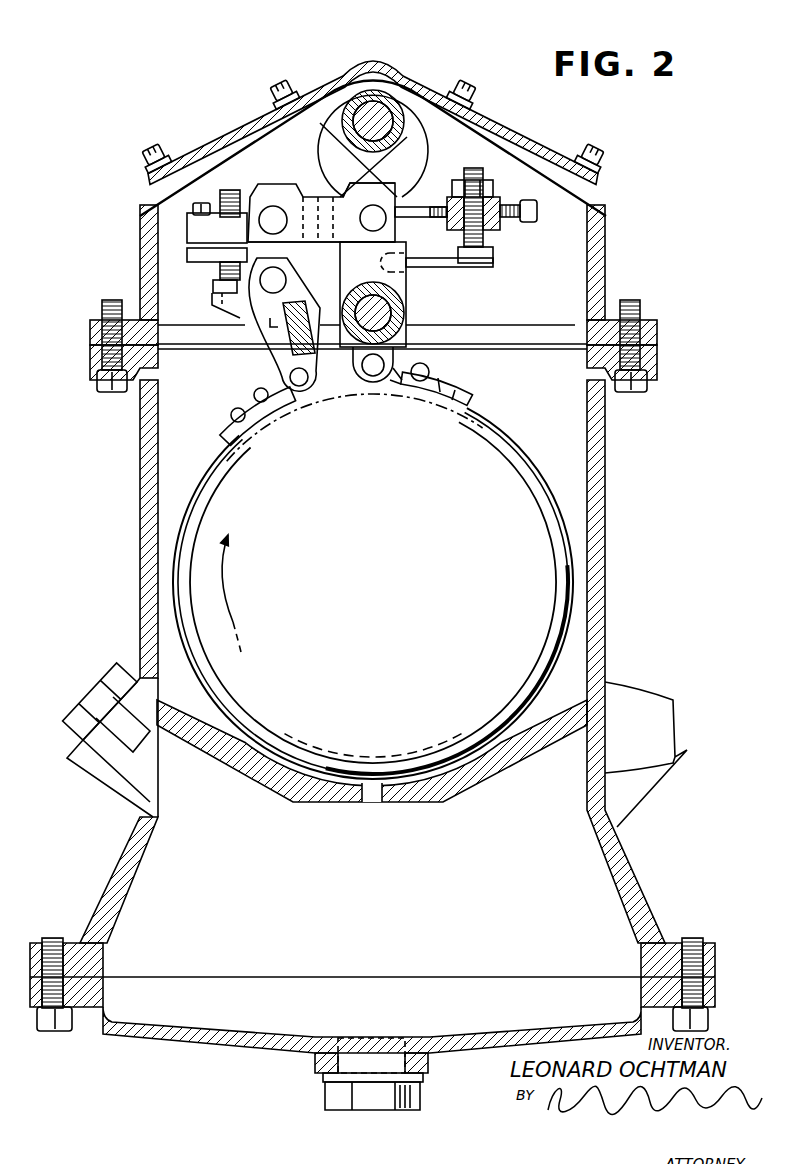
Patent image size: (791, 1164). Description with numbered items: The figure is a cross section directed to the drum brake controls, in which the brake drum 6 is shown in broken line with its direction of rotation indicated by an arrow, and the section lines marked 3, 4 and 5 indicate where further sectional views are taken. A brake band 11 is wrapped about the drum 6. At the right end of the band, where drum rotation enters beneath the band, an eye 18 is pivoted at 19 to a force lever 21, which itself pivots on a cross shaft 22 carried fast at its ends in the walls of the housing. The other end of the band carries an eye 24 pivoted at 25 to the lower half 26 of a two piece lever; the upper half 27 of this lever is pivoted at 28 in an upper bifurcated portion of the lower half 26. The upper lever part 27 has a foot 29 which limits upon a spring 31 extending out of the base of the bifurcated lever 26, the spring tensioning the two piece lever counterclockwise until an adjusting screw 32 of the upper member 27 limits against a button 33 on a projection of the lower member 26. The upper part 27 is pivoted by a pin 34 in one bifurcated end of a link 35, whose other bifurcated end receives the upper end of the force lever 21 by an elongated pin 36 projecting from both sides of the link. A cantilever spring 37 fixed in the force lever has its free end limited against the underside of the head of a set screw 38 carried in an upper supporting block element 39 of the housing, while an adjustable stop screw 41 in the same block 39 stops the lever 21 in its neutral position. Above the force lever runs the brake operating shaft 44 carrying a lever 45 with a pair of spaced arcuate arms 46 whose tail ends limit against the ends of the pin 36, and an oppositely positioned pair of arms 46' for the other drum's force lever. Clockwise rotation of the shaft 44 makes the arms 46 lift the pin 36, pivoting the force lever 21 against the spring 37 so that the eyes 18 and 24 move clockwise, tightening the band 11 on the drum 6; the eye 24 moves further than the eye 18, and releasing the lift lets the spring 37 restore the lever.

The section line 3- 3 is at (147, 172).
The section line 4- 4 is at (243, 68).
The section line 5- 5 is at (350, 17).
The brake drum 6 is at (410, 400).
The brake band 11 is at (211, 465).
The eye 18 is at (424, 366).
The pivot 19 is at (373, 386).
The force lever 21 is at (407, 287).
The cross shaft 22 is at (391, 316).
The eye 24 is at (281, 379).
The pivot 25 is at (310, 388).
The lower half of two piece lever 26 is at (225, 325).
The upper half of two piece lever 27 is at (277, 183).
The pivot 28 is at (301, 280).
The foot 29 is at (283, 305).
The spring 31 is at (268, 350).
The adjusting screw 32 is at (225, 190).
The button 33 is at (213, 284).
The pin 34 is at (273, 208).
The link 35 is at (296, 235).
The pin 36 is at (388, 193).
The cantilever spring 37 is at (423, 258).
The set screw 38 is at (493, 257).
The upper supporting block element 39 is at (500, 203).
The adjustable stop screw 41 is at (537, 215).
The brake operating shaft 44 is at (393, 130).
The lever 45 is at (405, 108).
The arcuate arms 46 is at (392, 146).
The arcuate arms 46' is at (346, 160).